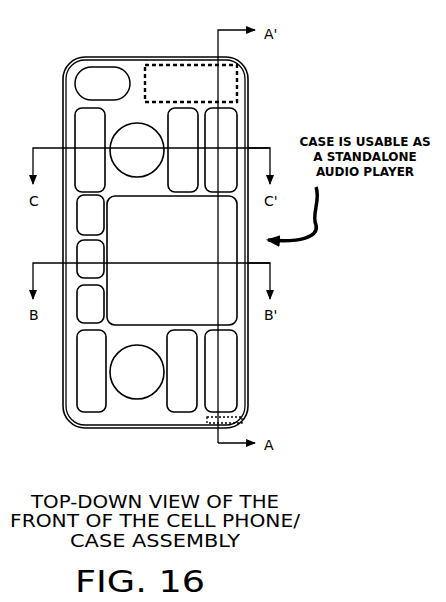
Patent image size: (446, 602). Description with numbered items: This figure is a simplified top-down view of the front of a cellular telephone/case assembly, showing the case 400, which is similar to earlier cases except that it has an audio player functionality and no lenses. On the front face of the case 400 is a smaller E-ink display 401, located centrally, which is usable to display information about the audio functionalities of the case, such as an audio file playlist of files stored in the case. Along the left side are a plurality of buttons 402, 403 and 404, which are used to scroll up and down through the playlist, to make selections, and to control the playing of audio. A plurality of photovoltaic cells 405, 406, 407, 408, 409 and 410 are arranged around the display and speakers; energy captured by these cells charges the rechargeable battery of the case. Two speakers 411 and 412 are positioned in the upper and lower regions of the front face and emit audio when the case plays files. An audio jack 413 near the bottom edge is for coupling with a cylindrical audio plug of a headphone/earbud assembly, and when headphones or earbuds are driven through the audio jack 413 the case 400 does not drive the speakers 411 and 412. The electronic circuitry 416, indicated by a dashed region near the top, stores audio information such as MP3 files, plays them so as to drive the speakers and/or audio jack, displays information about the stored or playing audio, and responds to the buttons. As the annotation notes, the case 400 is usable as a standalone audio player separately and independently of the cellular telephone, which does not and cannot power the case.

The case 400 is at (41, 46).
The E-ink display 401 is at (172, 260).
The button 402 is at (90, 215).
The button 403 is at (90, 259).
The button 404 is at (90, 304).
The photovoltaic cell 405 is at (239, 136).
The photovoltaic cell 406 is at (239, 370).
The photovoltaic cell 407 is at (183, 150).
The photovoltaic cell 408 is at (182, 371).
The photovoltaic cell 409 is at (90, 150).
The photovoltaic cell 410 is at (91, 371).
The speaker 411 is at (137, 150).
The speaker 412 is at (137, 372).
The audio jack 413 is at (244, 422).
The electronic circuitry 416 is at (237, 86).